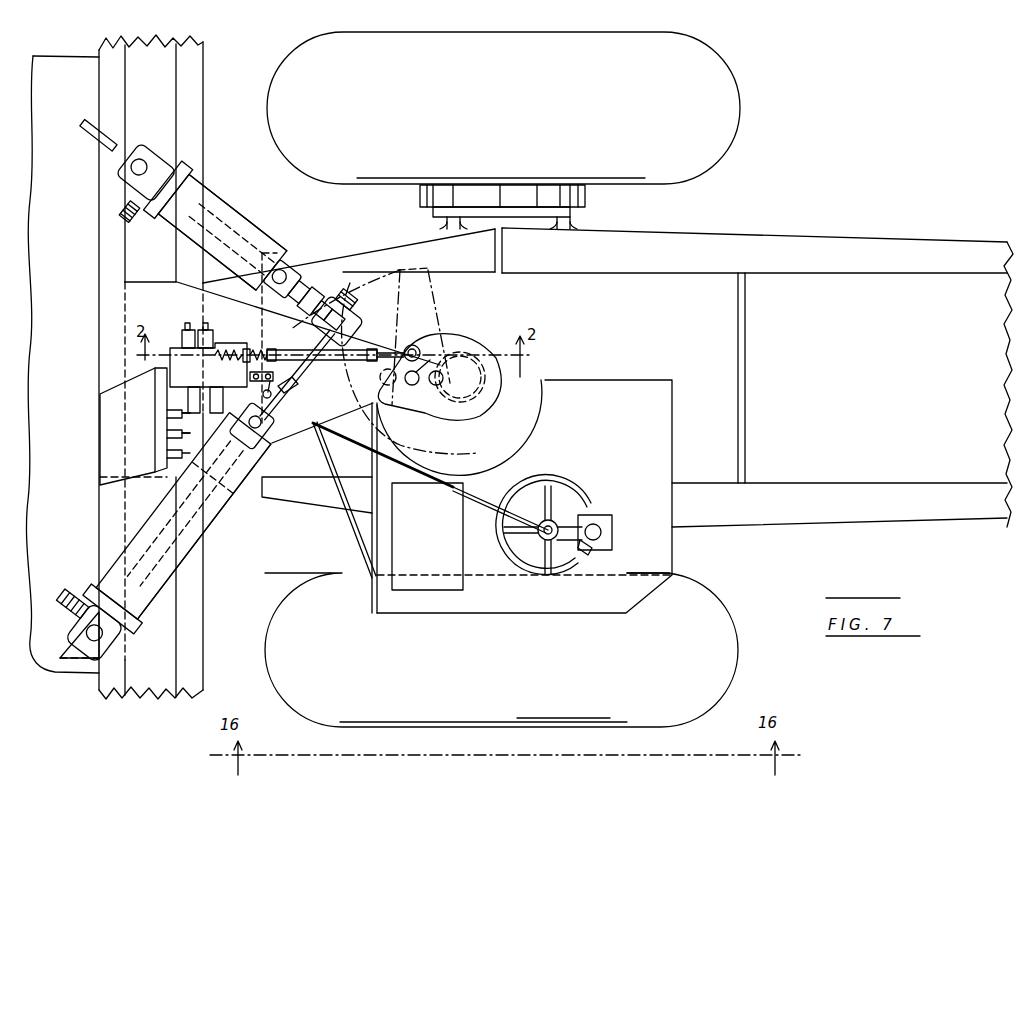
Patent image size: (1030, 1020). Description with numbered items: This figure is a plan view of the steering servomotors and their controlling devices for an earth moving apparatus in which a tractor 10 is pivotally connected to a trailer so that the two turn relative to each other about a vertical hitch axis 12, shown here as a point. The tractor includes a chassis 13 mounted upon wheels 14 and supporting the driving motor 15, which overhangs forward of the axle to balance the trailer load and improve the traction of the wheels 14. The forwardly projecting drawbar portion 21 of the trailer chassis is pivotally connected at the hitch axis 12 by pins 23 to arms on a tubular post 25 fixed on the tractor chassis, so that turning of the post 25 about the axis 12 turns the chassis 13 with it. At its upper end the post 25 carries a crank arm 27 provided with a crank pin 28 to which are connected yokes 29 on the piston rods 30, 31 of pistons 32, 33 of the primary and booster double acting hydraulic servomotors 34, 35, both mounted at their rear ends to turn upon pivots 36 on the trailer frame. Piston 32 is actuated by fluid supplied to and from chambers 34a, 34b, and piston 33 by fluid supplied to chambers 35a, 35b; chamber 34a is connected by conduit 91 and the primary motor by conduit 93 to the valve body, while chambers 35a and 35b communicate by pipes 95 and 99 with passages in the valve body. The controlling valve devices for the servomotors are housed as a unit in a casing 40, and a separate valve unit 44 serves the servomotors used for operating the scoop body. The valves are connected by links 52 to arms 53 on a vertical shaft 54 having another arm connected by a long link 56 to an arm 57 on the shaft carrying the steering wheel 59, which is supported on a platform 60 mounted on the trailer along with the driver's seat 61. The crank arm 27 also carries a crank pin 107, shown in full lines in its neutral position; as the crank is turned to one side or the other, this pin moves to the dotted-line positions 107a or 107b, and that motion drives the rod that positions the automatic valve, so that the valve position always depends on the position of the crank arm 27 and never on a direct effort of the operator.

The tractor 10 is at (938, 224).
The vertical axis 12 is at (440, 368).
The chassis 13 is at (940, 520).
The wheels 14 is at (725, 89).
The driving motor 15 is at (823, 378).
The drawbar portion 21 is at (340, 418).
The pins 23 is at (413, 395).
The tubular post 25 is at (497, 383).
The crank arm 27 is at (412, 344).
The crank pin 28 is at (352, 307).
The yokes 29 is at (322, 342).
The piston rod 30 is at (290, 410).
The piston rod 31 is at (310, 301).
The piston 32 is at (185, 513).
The piston 33 is at (222, 232).
The primary servomotor 34 is at (179, 521).
The chamber 34a is at (112, 609).
The chamber 34b is at (247, 463).
The booster servomotor 35 is at (205, 218).
The chamber 35a is at (168, 189).
The chamber 35b is at (223, 210).
The pivots 36 is at (140, 167).
The casing 40 is at (217, 345).
The valve unit 44 is at (113, 476).
The links 52 is at (250, 375).
The arms 53 is at (262, 391).
The vertical shaft 54 is at (288, 393).
The long link 56 is at (358, 443).
The arm 57 is at (586, 551).
The steering wheel 59 is at (563, 477).
The platform 60 is at (673, 548).
The driver's seat 61 is at (460, 584).
The conduit 91 is at (183, 413).
The conduit 93 is at (267, 437).
The pipe 95 is at (188, 327).
The pipe 99 is at (207, 327).
The crank pin 107 is at (433, 300).
The crank pin position 107a is at (382, 384).
The crank pin position 107b is at (464, 352).